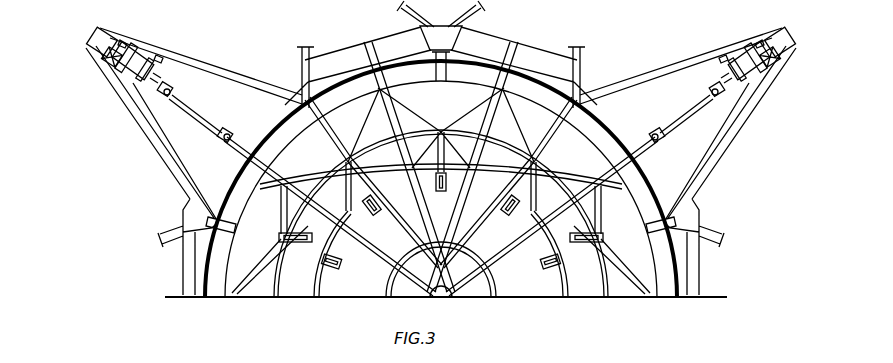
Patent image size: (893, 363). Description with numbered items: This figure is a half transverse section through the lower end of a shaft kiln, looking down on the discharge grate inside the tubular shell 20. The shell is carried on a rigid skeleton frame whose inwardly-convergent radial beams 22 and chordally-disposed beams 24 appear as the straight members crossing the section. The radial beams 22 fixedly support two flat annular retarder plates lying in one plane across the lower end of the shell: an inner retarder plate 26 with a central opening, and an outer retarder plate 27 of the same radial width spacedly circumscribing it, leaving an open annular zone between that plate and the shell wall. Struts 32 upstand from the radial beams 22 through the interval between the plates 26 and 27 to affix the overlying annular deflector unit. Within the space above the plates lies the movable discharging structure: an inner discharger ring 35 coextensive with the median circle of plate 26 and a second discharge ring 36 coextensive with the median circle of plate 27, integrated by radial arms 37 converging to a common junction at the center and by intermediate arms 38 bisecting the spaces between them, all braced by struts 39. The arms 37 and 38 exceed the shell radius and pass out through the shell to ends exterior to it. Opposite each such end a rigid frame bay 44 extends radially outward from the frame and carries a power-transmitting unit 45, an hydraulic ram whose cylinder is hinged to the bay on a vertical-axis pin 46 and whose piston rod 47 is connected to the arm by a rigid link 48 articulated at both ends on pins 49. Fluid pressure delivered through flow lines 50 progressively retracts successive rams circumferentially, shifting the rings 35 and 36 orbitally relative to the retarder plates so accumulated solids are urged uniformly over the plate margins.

The tubular shell 20 is at (205, 263).
The radial beams 22 is at (322, 108).
The chordally-disposed beams 24 is at (348, 47).
The inner retarder plate 26 is at (441, 254).
The outer retarder plate 27 is at (441, 192).
The struts 32 is at (380, 190).
The inner discharger ring 35 is at (474, 250).
The second discharge ring 36 is at (346, 161).
The arms 37 is at (389, 259).
The arms 38 is at (391, 126).
The struts 39 is at (279, 238).
The rigid frame bay 44 is at (263, 52).
The power-transmitting unit 45 is at (147, 46).
The pin 46 is at (99, 60).
The piston rod 47 is at (162, 92).
The rigid link 48 is at (198, 124).
The pins 49 is at (173, 91).
The flow lines 50 is at (130, 36).